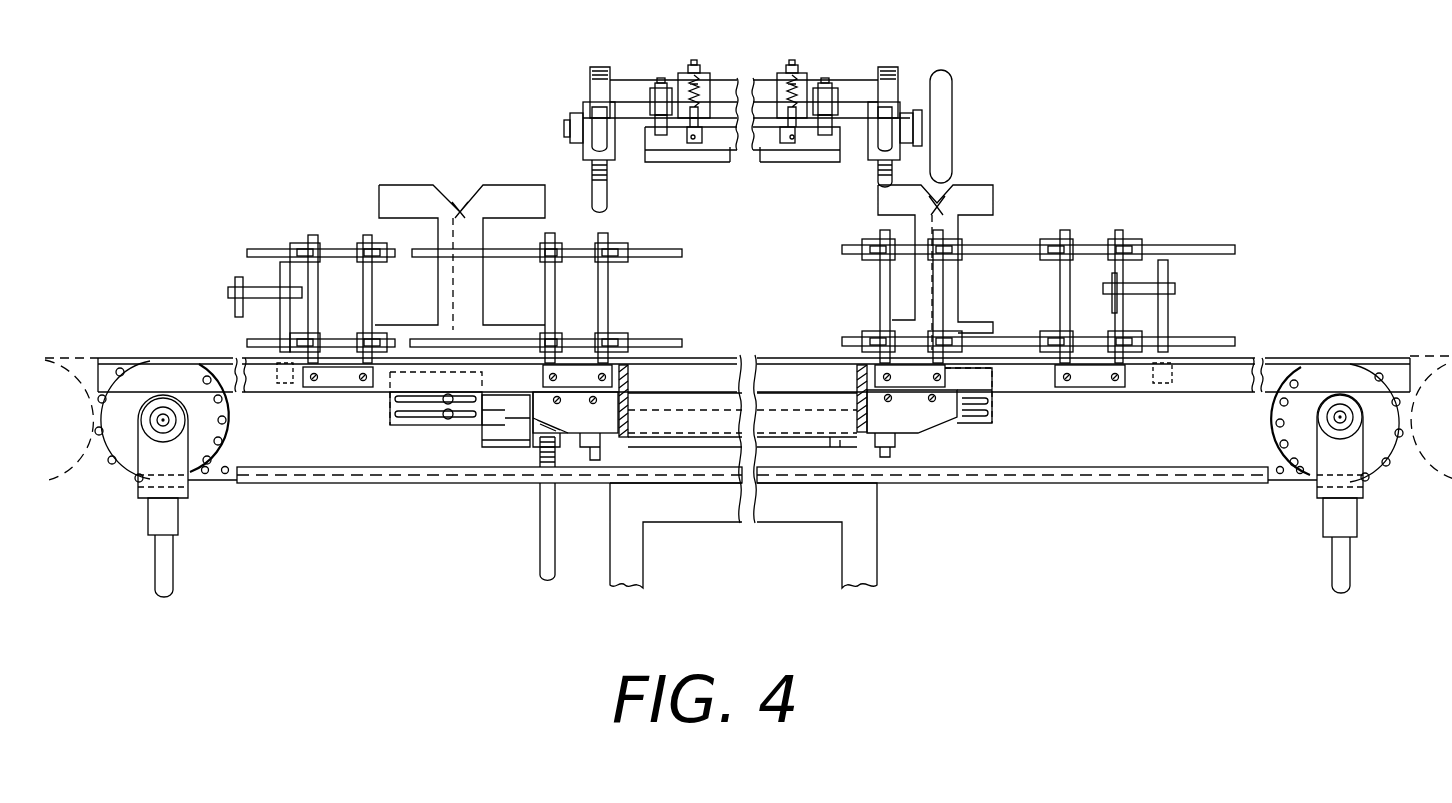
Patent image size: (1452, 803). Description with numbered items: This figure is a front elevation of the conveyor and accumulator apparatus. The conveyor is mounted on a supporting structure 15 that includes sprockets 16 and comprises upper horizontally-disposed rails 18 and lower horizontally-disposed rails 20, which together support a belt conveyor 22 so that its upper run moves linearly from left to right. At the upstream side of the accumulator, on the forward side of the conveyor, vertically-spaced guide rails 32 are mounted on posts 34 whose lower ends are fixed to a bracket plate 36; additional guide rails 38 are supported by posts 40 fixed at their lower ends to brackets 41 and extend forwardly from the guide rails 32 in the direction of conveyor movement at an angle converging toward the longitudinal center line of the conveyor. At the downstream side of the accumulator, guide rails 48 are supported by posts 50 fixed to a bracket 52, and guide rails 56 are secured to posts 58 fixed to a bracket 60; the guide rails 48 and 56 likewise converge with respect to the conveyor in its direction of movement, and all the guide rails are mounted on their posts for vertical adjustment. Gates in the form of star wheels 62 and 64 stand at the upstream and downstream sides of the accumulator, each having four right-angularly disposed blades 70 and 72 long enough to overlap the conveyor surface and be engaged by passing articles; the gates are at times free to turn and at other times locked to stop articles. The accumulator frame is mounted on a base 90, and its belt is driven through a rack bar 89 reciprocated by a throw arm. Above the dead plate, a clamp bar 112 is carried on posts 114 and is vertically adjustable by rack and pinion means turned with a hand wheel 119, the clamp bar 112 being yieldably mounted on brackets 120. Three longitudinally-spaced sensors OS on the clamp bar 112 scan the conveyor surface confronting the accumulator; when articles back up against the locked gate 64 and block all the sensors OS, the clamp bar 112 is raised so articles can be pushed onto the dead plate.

The supporting structure 15 is at (155, 555).
The sprockets 16 is at (222, 438).
The upper horizontally-disposed rails 18 is at (268, 392).
The lower horizontally-disposed rails 20 is at (355, 484).
The belt conveyor 22 is at (200, 357).
The guide rails 32 is at (342, 250).
The posts 34 is at (368, 320).
The bracket plate 36 is at (348, 389).
The additional guide rails 38 is at (483, 338).
The posts 40 is at (601, 303).
The brackets 41 is at (543, 380).
The guide rails 48 is at (848, 245).
The posts 50 is at (942, 300).
The bracket 52 is at (945, 375).
The guide rails 56 is at (1152, 248).
The posts 58 is at (1060, 294).
The bracket 60 is at (1086, 389).
The star wheel 62 is at (450, 180).
The star wheel 64 is at (965, 179).
The blades 70 is at (507, 200).
The blades 72 is at (985, 197).
The rack bar 89 is at (540, 516).
The base 90 is at (878, 522).
The clamp bar 112 is at (715, 163).
The posts 114 is at (605, 197).
The hand wheel 119 is at (945, 116).
The brackets 120 is at (705, 74).
The sensors OS is at (652, 94).